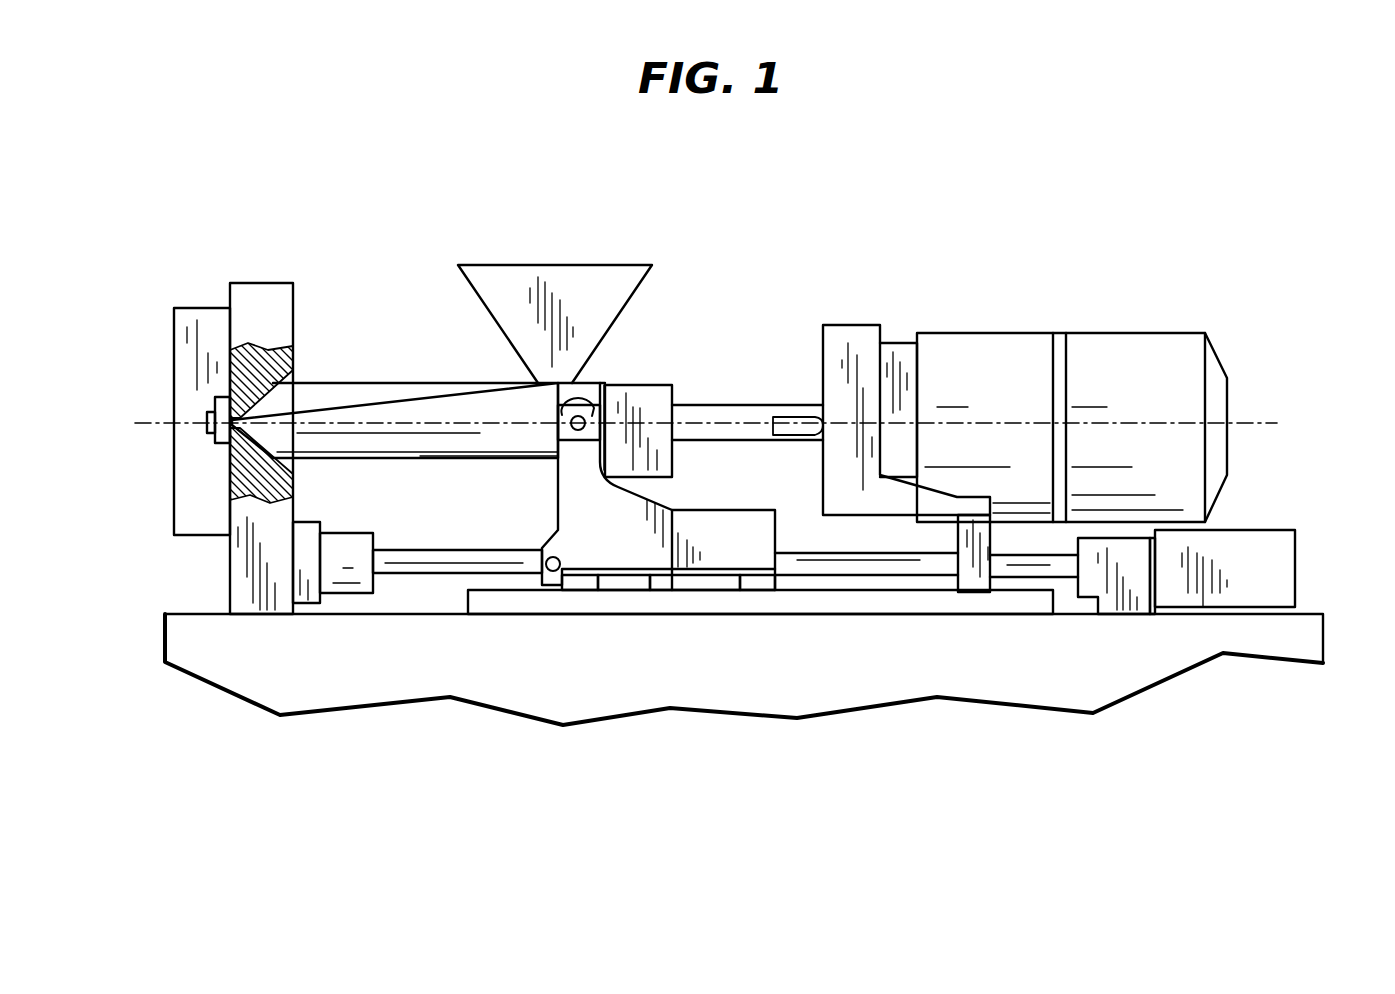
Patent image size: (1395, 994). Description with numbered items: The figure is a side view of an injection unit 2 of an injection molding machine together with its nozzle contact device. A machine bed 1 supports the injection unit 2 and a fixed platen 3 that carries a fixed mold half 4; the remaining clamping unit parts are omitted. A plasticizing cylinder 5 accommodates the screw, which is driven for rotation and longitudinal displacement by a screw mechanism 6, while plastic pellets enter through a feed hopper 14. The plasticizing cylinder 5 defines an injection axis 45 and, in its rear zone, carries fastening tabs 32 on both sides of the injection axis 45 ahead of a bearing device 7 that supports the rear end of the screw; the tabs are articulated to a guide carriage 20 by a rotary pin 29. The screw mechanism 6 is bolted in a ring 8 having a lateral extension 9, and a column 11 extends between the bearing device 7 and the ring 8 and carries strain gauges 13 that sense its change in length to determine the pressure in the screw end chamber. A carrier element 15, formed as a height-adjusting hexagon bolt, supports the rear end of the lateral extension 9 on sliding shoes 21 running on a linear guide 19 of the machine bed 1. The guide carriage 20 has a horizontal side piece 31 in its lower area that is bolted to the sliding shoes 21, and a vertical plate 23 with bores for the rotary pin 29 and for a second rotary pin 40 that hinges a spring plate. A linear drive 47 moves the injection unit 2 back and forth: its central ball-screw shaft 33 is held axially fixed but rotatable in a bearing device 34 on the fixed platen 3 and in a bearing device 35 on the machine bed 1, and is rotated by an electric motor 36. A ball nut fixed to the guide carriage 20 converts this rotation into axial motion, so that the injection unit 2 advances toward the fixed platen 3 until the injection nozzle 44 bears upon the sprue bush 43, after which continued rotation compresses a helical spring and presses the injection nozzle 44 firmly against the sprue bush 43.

The machine bed 1 is at (1323, 636).
The injection unit 2 is at (925, 228).
The fixed platen 3 is at (259, 283).
The fixed mold half 4 is at (173, 332).
The plasticizing cylinder 5 is at (355, 383).
The screw mechanism 6 is at (1048, 312).
The bearing device 7 is at (653, 383).
The ring 8 is at (852, 325).
The lateral extension 9 is at (858, 500).
The column 11 is at (768, 405).
The strain gauges 13 is at (782, 433).
The feed hopper 14 is at (547, 265).
The carrier element 15 is at (975, 592).
The linear guide 19 is at (897, 615).
The guide carriage 20 is at (553, 522).
The sliding shoes 21 is at (582, 592).
The vertical plate 23 is at (675, 523).
The rotary pin 29 is at (560, 409).
The horizontal side piece 31 is at (650, 592).
The fastening tabs 32 is at (595, 400).
The ball-screw shaft 33 is at (437, 550).
The bearing device 34 is at (345, 597).
The bearing device 35 is at (1117, 597).
The electric motor 36 is at (1273, 530).
The rotary pin 40 is at (563, 552).
The sprue bush 43 is at (222, 448).
The injection nozzle 44 is at (213, 405).
The injection axis 45 is at (1253, 423).
The linear drive 47 is at (400, 598).